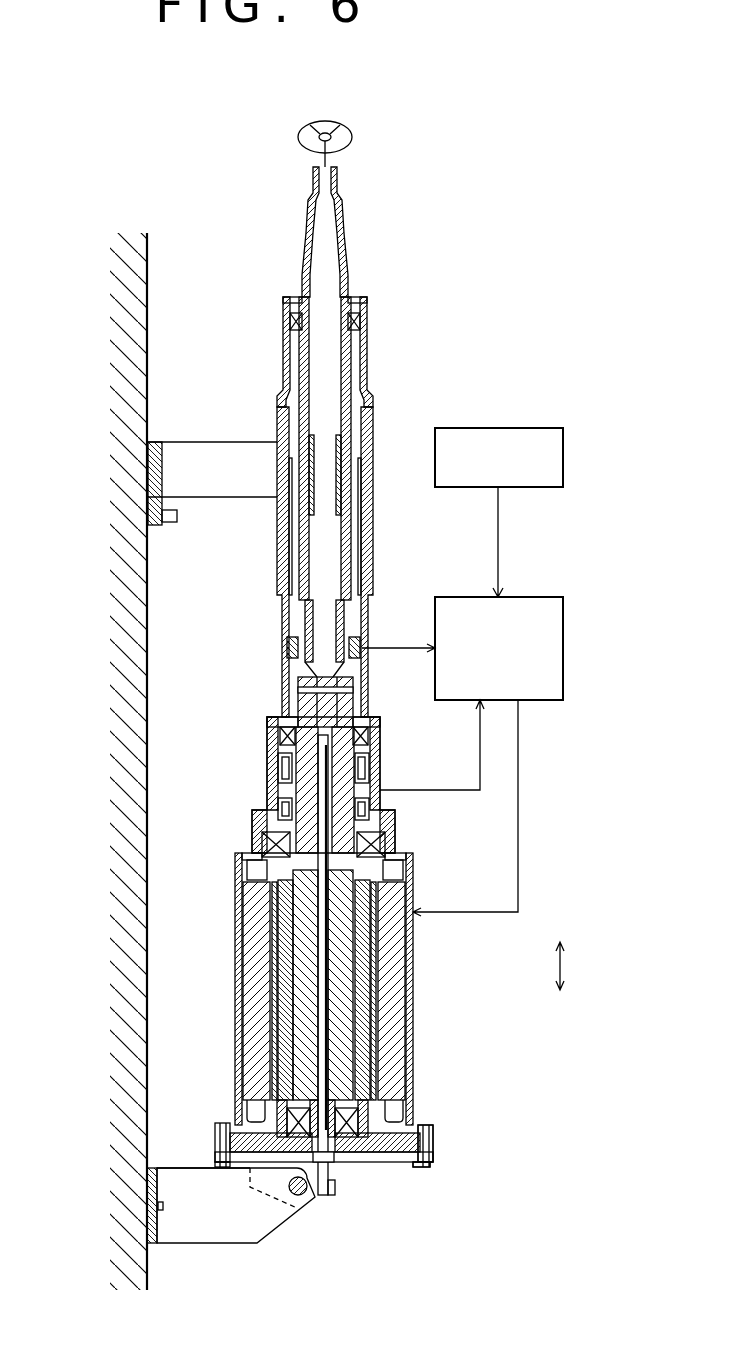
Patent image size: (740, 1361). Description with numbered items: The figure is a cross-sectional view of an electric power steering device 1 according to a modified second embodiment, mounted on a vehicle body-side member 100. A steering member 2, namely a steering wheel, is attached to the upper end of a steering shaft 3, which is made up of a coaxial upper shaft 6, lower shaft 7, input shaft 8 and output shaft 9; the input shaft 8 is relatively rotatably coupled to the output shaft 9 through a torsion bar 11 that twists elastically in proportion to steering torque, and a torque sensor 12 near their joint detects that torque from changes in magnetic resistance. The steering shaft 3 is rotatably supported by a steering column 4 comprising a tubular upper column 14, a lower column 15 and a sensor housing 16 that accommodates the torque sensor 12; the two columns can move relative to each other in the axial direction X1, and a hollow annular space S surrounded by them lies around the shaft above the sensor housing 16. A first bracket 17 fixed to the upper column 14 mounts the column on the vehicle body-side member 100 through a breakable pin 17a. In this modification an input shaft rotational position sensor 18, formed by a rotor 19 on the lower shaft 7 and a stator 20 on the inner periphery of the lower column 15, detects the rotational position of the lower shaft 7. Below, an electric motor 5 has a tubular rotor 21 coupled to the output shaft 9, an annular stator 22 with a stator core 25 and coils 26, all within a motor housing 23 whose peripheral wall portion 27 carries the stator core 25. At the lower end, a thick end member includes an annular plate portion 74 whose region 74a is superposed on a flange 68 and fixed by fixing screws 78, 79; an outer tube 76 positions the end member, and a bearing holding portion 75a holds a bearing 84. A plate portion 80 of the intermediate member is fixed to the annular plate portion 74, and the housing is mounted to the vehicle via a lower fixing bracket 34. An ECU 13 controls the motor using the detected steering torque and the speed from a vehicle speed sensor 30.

The electric power steering device 1 is at (479, 191).
The steering member 2 is at (353, 137).
The steering shaft 3 is at (383, 228).
The steering column 4 is at (403, 368).
The electric motor 5 is at (480, 968).
The upper shaft 6 is at (348, 262).
The lower shaft 7 is at (351, 530).
The input shaft 8 is at (353, 718).
The output shaft 9 is at (322, 1198).
The torsion bar 11 is at (278, 750).
The torque sensor 12 is at (272, 772).
The ECU 13 is at (533, 597).
The upper column 14 is at (373, 420).
The lower column 15 is at (371, 600).
The sensor housing 16 is at (375, 770).
The first bracket 17 is at (212, 510).
The pin 17a is at (168, 522).
The input shaft rotational position sensor 18 is at (266, 611).
The rotor 19 is at (298, 672).
The stator 20 is at (287, 648).
The rotor 21 is at (380, 950).
The stator 22 is at (412, 1000).
The motor housing 23 is at (413, 1030).
The stator core 25 is at (392, 1058).
The coils 26 is at (392, 1110).
The peripheral wall portion 27 is at (237, 1063).
The vehicle speed sensor 30 is at (528, 428).
The lower fixing bracket 34 is at (182, 1233).
The flange 68 is at (433, 1130).
The annular plate portion 74 is at (402, 1162).
The region 74a is at (213, 1148).
The bearing holding portion 75a is at (380, 1150).
The outer tube 76 is at (412, 1125).
The fixing screw 78 is at (213, 1168).
The fixing screw 79 is at (423, 1168).
The plate portion 80 is at (240, 1168).
The bearing 84 is at (352, 1162).
The vehicle body-side member 100 is at (147, 408).
The annular space S is at (361, 447).
The axial direction X1 is at (575, 965).